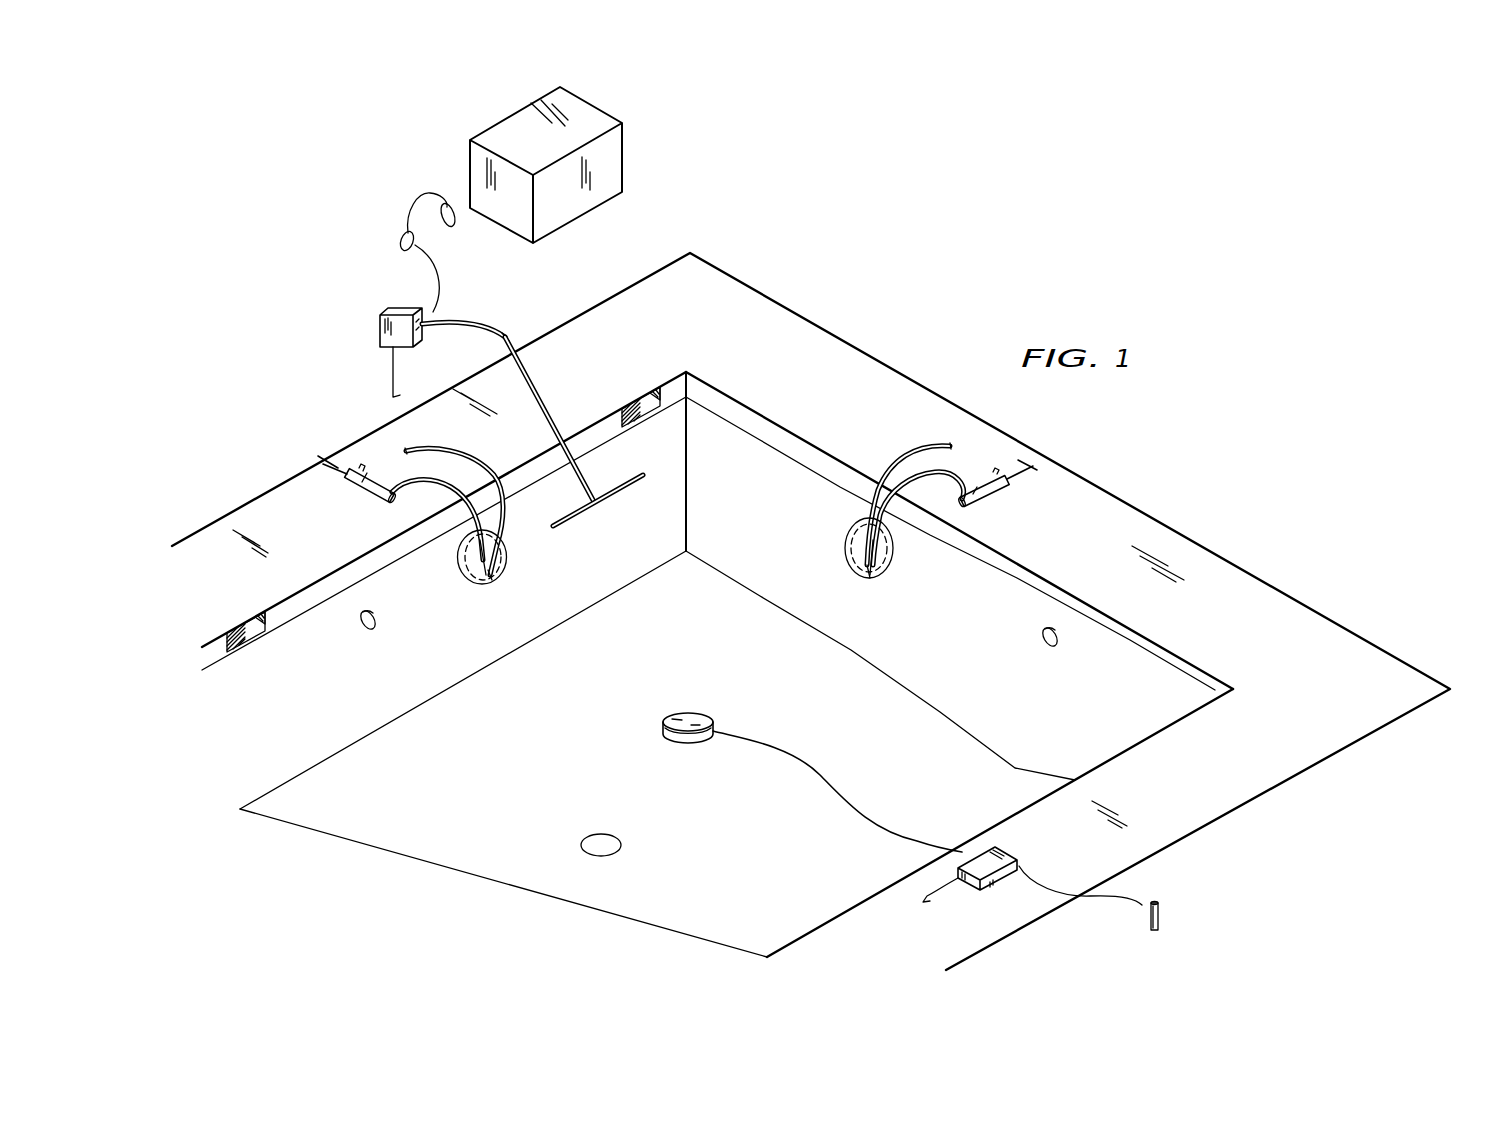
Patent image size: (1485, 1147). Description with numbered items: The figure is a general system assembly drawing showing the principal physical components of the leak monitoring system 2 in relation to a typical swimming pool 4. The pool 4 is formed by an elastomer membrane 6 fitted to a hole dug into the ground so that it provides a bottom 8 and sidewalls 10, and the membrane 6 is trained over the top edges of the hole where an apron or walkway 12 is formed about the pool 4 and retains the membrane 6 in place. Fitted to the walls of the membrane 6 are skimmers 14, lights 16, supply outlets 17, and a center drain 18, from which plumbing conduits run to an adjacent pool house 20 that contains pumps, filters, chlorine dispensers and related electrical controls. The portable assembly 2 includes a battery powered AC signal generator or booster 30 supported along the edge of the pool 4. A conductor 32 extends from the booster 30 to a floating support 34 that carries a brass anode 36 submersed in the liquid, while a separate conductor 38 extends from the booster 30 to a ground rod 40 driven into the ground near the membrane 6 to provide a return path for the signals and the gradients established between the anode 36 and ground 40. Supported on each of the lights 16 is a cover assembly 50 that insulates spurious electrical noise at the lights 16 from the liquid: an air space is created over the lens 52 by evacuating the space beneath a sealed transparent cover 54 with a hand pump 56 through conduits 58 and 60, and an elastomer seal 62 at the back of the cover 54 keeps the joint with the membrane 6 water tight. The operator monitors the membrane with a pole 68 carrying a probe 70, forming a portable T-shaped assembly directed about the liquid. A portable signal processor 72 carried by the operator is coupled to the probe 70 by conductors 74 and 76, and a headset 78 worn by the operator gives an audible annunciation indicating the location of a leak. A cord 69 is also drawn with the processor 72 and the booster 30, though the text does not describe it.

The monitoring system 2 is at (340, 335).
The swimming pool 4 is at (1243, 573).
The elastomer membrane 6 is at (734, 419).
The bottom 8 is at (591, 789).
The sidewalls 10 is at (582, 661).
The apron or walkway 12 is at (258, 510).
The skimmers 14 is at (245, 640).
The lights 16 is at (477, 584).
The supply outlets 17 is at (372, 628).
The center drain 18 is at (604, 836).
The pool house 20 is at (623, 123).
The signal generator or booster 30 is at (1005, 855).
The conductor 32 is at (844, 785).
The floating support 34 is at (685, 714).
The brass anode 36 is at (662, 735).
The conductor 38 is at (1124, 901).
The ground rod 40 is at (1160, 922).
The cover assembly 50 is at (362, 504).
The lens 52 is at (508, 549).
The transparent cover 54 is at (481, 575).
The hand pump 56 is at (318, 462).
The conduit 58 is at (460, 455).
The conduit 60 is at (435, 505).
The elastomer seal 62 is at (463, 557).
The pole 68 is at (540, 378).
The power cord 69 is at (393, 382).
The probe 70 is at (601, 505).
The portable signal processor 72 is at (387, 310).
The conductor 74 is at (450, 322).
The conductor 76 is at (486, 323).
The headset 78 is at (413, 210).